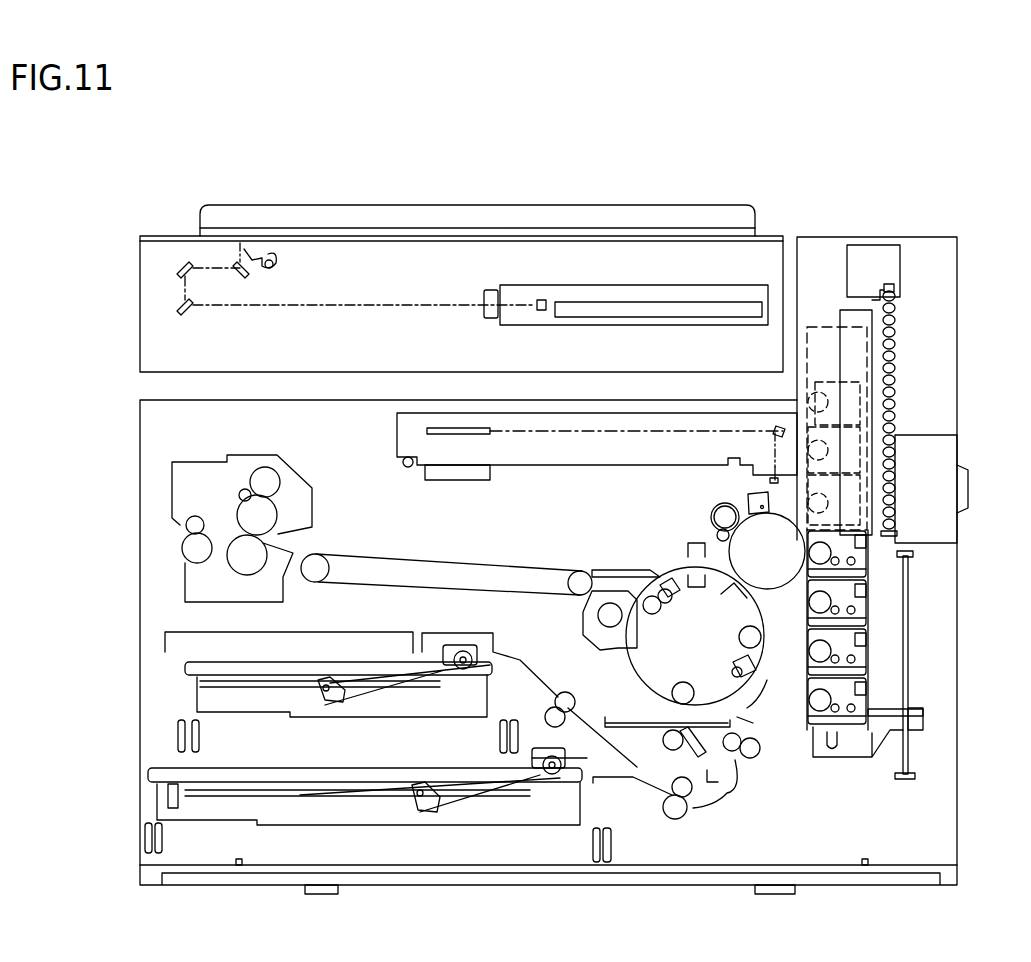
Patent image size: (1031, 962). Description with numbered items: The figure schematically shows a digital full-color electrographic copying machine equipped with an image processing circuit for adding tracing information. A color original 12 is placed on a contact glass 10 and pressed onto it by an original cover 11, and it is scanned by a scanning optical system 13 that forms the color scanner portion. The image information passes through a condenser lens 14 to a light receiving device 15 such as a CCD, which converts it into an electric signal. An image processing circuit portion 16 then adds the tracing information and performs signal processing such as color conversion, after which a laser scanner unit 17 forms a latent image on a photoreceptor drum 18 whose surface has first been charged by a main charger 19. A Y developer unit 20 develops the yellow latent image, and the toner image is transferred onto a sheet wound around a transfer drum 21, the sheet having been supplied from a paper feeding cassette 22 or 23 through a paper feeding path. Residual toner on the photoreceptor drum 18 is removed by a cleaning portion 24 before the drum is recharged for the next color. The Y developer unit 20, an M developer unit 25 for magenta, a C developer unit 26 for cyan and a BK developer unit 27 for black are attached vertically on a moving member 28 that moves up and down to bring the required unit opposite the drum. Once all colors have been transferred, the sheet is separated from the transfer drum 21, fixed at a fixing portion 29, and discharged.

The contact glass 10 is at (592, 236).
The original cover 11 is at (440, 205).
The color original 12 is at (384, 229).
The scanning optical system 13 is at (218, 290).
The condenser lens 14 is at (488, 292).
The light receiving device 15 is at (546, 300).
The image processing circuit portion 16 is at (740, 307).
The laser scanner unit 17 is at (515, 462).
The photoreceptor drum 18 is at (778, 582).
The main charger 19 is at (747, 500).
The Y developer unit 20 is at (862, 555).
The transfer drum 21 is at (607, 673).
The paper feeding cassette 22 is at (250, 703).
The paper feeding cassette 23 is at (353, 808).
The cleaning portion 24 is at (710, 518).
The M developer unit 25 is at (857, 600).
The C developer unit 26 is at (857, 650).
The BK developer unit 27 is at (848, 722).
The moving member 28 is at (807, 733).
The fixing portion 29 is at (202, 470).